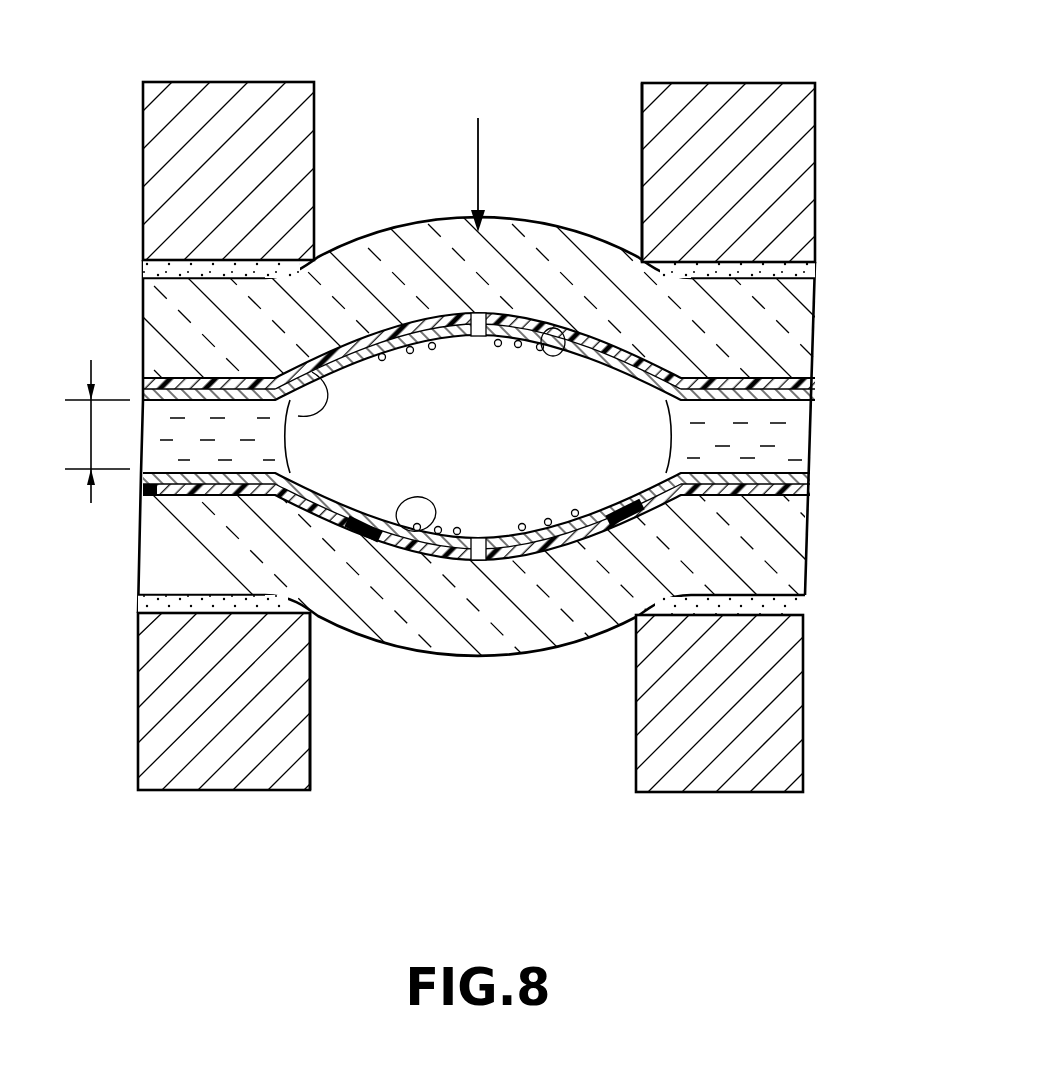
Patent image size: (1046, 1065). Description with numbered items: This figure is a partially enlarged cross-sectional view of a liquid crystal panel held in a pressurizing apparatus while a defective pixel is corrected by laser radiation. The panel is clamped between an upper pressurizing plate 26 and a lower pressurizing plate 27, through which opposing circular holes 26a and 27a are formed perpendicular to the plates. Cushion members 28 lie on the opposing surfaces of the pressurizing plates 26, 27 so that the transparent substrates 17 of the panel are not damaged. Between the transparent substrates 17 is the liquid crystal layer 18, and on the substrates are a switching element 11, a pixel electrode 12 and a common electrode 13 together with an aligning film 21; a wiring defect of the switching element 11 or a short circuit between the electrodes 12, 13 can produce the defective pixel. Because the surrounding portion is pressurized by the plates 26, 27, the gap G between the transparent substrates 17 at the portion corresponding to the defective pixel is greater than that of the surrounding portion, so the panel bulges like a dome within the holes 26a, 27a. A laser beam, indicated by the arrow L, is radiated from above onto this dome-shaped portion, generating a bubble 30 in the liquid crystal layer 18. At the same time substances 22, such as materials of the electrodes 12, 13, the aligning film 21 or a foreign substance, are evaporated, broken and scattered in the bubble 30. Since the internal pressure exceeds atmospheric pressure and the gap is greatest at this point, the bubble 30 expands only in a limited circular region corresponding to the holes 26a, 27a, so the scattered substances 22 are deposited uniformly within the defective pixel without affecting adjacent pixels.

The switching element 11 is at (363, 540).
The pixel electrode 12 is at (520, 558).
The common electrode 13 is at (813, 383).
The transparent substrate 17 is at (800, 325).
The liquid crystal layer 18 is at (173, 442).
The aligning film 21 is at (800, 398).
The substances 22 is at (562, 332).
The upper pressurizing plate 26 is at (757, 83).
The circular hole 26a is at (641, 103).
The lower pressurizing plate 27 is at (160, 702).
The circular hole 27a is at (310, 760).
The cushion member 28 is at (800, 268).
The bubble 30 is at (298, 416).
The arrow indicating laser beam L is at (477, 159).
The gap G is at (94, 431).